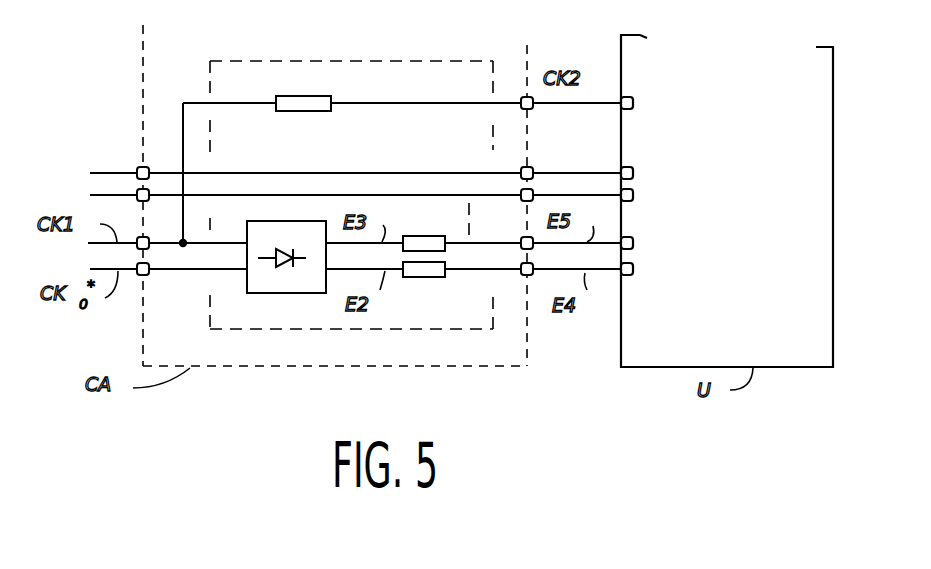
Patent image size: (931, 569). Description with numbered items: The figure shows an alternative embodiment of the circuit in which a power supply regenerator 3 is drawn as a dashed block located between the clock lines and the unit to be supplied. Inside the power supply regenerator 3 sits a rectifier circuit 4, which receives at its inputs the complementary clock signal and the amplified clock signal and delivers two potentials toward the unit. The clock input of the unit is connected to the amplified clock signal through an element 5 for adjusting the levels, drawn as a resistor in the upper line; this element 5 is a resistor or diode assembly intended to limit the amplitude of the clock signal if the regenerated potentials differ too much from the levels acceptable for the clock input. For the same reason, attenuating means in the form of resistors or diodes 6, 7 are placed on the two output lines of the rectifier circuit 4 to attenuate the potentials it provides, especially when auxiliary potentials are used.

The power supply regenerator 3 is at (477, 330).
The rectifier circuit 4 is at (291, 294).
The element for adjusting the levels 5 is at (315, 112).
The resistor or diode 6 is at (420, 278).
The resistor or diode 7 is at (420, 236).